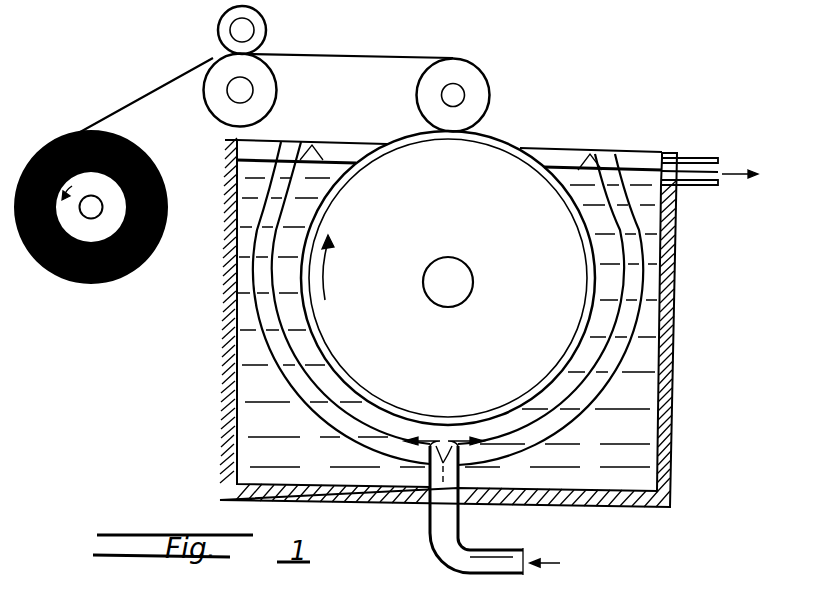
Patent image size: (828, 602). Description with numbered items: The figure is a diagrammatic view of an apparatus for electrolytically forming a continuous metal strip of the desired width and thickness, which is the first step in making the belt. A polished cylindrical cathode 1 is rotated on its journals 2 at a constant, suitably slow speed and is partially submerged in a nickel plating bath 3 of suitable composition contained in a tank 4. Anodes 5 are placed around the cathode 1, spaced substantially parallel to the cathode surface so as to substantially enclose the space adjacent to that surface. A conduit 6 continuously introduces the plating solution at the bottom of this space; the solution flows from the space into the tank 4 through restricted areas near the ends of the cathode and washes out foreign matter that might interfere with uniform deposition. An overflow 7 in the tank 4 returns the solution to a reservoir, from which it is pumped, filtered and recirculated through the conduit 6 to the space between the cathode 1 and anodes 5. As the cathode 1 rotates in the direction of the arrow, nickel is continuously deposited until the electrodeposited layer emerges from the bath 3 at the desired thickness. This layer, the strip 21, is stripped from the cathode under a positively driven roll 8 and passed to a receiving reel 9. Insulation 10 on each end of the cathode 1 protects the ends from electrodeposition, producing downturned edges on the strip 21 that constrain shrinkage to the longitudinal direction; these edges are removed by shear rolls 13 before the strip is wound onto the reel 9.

The cathode 1 is at (515, 122).
The journals 2 is at (465, 292).
The nickel plating bath 3 is at (270, 158).
The tank 4 is at (221, 344).
The anodes 5 is at (285, 383).
The conduit 6 is at (428, 515).
The overflow 7 is at (707, 155).
The positively driven roll 8 is at (475, 83).
The receiving reel 9 is at (76, 283).
The insulation 10 is at (540, 148).
The shear rolls 13 is at (266, 33).
The strip 21 is at (362, 45).